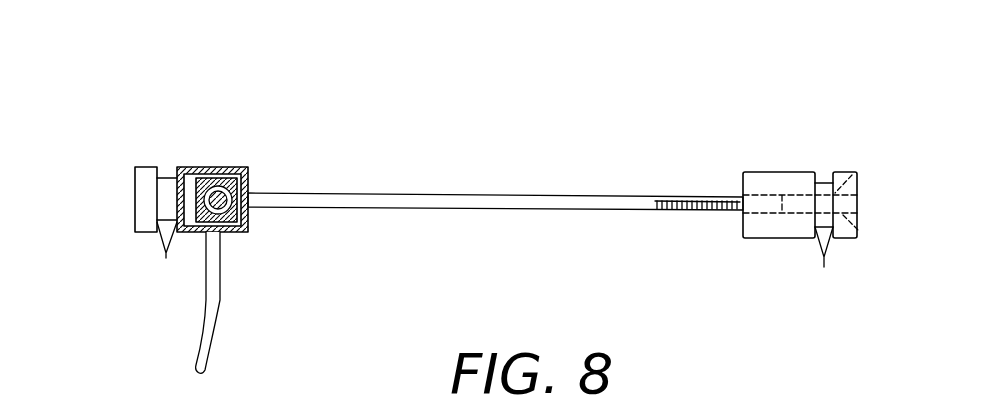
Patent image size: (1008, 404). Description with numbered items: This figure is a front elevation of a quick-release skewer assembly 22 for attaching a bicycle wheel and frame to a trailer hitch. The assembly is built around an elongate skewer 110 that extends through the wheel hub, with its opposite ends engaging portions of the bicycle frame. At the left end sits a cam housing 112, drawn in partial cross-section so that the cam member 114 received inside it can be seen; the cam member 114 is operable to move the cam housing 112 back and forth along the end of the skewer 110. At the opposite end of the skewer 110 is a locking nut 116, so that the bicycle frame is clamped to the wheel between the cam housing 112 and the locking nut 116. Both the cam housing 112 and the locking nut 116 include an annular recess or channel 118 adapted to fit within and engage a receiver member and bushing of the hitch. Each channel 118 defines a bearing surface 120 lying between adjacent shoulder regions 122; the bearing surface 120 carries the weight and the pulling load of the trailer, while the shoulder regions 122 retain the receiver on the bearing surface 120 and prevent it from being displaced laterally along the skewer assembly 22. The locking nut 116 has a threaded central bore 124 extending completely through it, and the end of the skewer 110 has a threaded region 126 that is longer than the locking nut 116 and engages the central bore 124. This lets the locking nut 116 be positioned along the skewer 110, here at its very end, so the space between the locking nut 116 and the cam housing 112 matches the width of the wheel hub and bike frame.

The skewer assembly 22 is at (768, 62).
The skewer 110 is at (427, 193).
The cam housing 112 is at (236, 166).
The cam member 114 is at (233, 237).
The locking nut 116 is at (767, 170).
The annular recess or channel 118 is at (168, 155).
The bearing surface 120 is at (167, 192).
The shoulder regions 122 is at (495, 238).
The threaded central bore 124 is at (858, 230).
The threaded region 126 is at (707, 212).